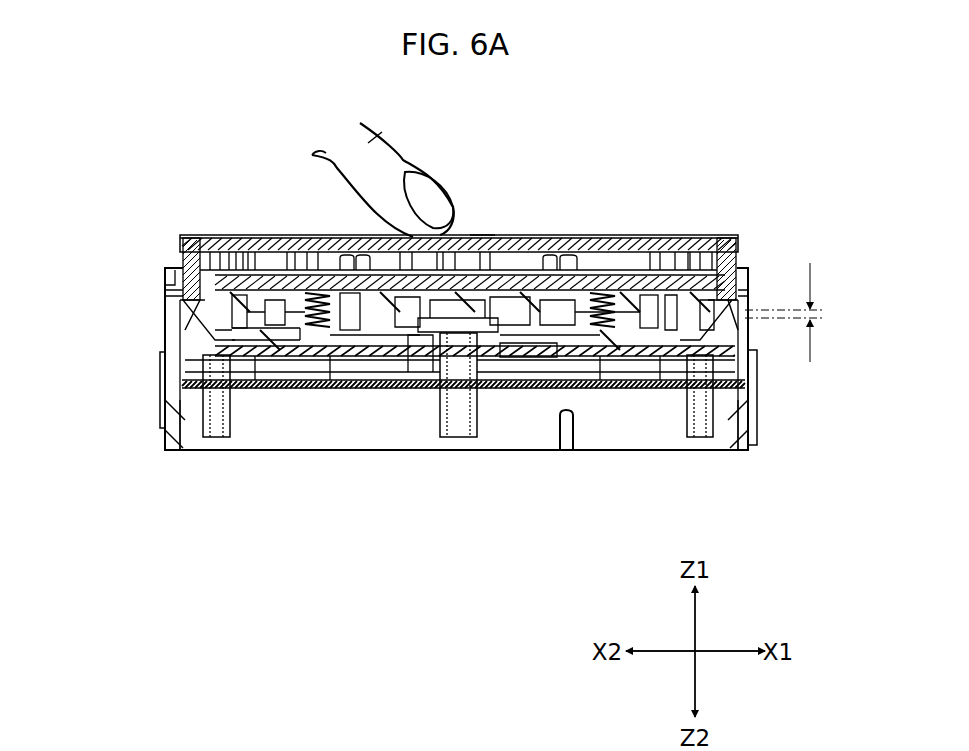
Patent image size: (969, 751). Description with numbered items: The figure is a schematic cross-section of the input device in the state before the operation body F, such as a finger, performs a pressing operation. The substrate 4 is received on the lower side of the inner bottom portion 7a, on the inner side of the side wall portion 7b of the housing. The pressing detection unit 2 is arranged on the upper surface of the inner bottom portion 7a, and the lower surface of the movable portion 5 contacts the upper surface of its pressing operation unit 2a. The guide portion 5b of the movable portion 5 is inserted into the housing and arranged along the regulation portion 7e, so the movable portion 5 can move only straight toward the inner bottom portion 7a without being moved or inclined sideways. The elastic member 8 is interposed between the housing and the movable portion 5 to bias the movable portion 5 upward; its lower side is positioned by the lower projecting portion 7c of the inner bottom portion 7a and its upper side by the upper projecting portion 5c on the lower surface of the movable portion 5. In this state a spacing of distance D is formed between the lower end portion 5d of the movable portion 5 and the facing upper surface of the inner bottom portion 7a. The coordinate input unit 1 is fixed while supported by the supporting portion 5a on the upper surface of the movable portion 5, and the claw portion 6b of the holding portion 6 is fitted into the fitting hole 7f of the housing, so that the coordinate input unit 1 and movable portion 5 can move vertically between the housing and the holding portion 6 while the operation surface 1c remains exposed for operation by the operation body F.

The coordinate input unit 1 is at (510, 235).
The operation surface 1c is at (481, 233).
The pressing detection unit 2 is at (492, 452).
The pressing operation unit 2a is at (430, 452).
The substrate 4 is at (543, 452).
The movable portion 5 is at (278, 237).
The supporting portion 5a is at (248, 237).
The guide portion 5b is at (236, 452).
The upper projecting portion 5c is at (312, 238).
The lower end portion 5d is at (530, 237).
The holding portion 6 is at (186, 236).
The claw portion 6b is at (160, 300).
The inner bottom portion 7a is at (590, 452).
The side wall portion 7b is at (175, 452).
The lower projecting portion 7c is at (345, 452).
The regulation portion 7e is at (200, 452).
The fitting hole 7f is at (167, 327).
The elastic member 8 is at (294, 238).
The operation body F is at (360, 123).
The distance D is at (783, 325).